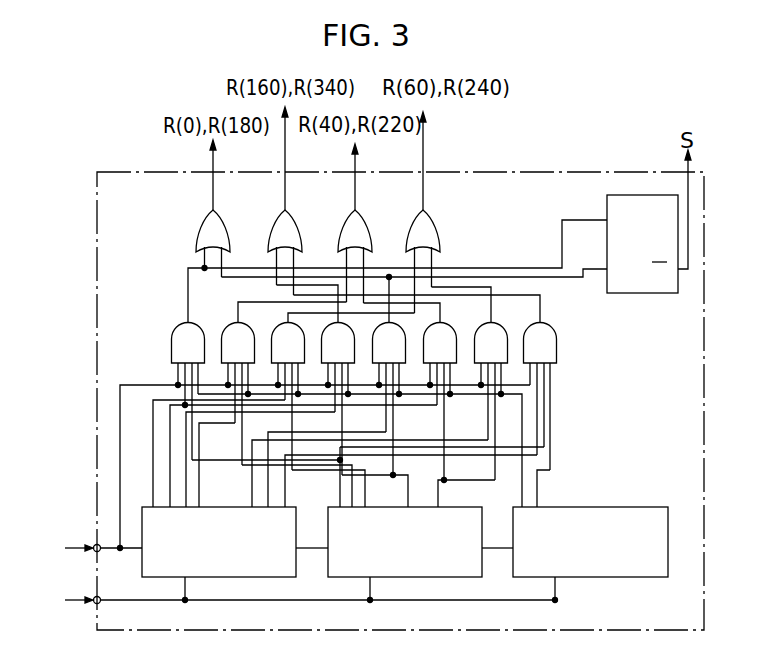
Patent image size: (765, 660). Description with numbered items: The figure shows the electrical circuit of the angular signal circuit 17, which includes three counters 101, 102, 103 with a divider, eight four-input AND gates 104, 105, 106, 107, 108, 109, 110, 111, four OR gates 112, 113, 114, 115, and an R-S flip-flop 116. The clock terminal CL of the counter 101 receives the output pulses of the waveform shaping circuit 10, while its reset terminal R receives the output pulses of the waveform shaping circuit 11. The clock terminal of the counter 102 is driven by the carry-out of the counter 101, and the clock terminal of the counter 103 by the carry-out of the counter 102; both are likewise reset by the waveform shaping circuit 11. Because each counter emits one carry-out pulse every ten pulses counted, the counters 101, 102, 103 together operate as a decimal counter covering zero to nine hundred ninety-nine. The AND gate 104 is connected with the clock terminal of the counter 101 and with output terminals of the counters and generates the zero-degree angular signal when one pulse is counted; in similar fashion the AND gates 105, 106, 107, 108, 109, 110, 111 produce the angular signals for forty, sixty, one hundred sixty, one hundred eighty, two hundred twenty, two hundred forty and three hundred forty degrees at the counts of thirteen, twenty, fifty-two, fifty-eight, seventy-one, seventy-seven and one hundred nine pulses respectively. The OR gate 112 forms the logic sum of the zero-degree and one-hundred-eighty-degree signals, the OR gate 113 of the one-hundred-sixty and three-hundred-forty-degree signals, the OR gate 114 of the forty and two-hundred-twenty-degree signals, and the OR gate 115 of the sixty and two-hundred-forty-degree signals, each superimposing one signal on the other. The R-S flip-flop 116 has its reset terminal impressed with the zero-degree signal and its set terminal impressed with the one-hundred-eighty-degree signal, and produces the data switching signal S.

The waveform shaping circuit 10 is at (81, 549).
The waveform shaping circuit 11 is at (289, 601).
The angular signal circuit 17 is at (704, 318).
The counter 101 is at (255, 578).
The counter 102 is at (430, 578).
The counter 103 is at (612, 578).
The four-input AND gate 104 is at (172, 333).
The four-input AND gate 105 is at (223, 333).
The four-input AND gate 106 is at (273, 334).
The four-input AND gate 107 is at (325, 322).
The four-input AND gate 108 is at (397, 322).
The four-input AND gate 109 is at (447, 333).
The four-input AND gate 110 is at (500, 333).
The four-input AND gate 111 is at (553, 336).
The OR gate 112 is at (199, 222).
The OR gate 113 is at (271, 222).
The OR gate 114 is at (341, 222).
The OR gate 115 is at (409, 222).
The R-S flip-flop 116 is at (636, 293).